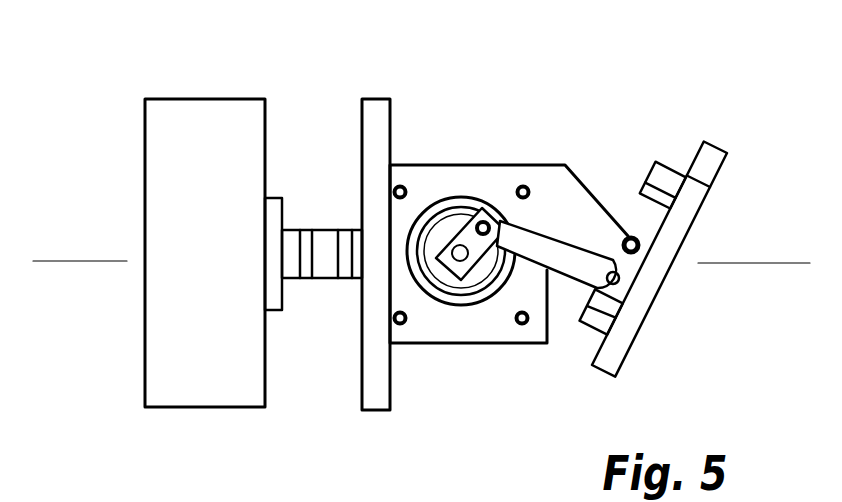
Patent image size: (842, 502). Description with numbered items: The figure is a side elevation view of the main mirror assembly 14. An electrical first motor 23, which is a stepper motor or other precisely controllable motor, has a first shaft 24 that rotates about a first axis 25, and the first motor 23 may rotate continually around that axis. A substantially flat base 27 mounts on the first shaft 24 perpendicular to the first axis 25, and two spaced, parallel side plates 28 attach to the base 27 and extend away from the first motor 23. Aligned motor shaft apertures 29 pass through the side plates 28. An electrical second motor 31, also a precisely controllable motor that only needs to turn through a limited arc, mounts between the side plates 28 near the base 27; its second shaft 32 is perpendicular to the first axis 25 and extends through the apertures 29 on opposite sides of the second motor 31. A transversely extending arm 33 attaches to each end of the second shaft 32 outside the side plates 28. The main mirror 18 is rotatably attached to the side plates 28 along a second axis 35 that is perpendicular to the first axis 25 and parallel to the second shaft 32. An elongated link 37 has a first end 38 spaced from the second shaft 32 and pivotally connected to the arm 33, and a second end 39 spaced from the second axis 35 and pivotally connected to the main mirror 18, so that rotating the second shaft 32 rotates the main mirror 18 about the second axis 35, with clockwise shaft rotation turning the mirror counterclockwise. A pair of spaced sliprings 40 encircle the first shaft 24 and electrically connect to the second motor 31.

The main mirror assembly 14 is at (167, 62).
The main mirror 18 is at (650, 311).
The first motor 23 is at (181, 397).
The first shaft 24 is at (328, 245).
The first axis 25 is at (752, 268).
The base 27 is at (377, 120).
The side plates 28 is at (428, 182).
The motor shaft apertures 29 is at (496, 292).
The second motor 31 is at (436, 298).
The second shaft 32 is at (476, 262).
The arm 33 is at (483, 262).
The second axis 35 is at (630, 228).
The link 37 is at (585, 272).
The first end 38 is at (483, 220).
The second end 39 is at (612, 370).
The sliprings 40 is at (340, 280).